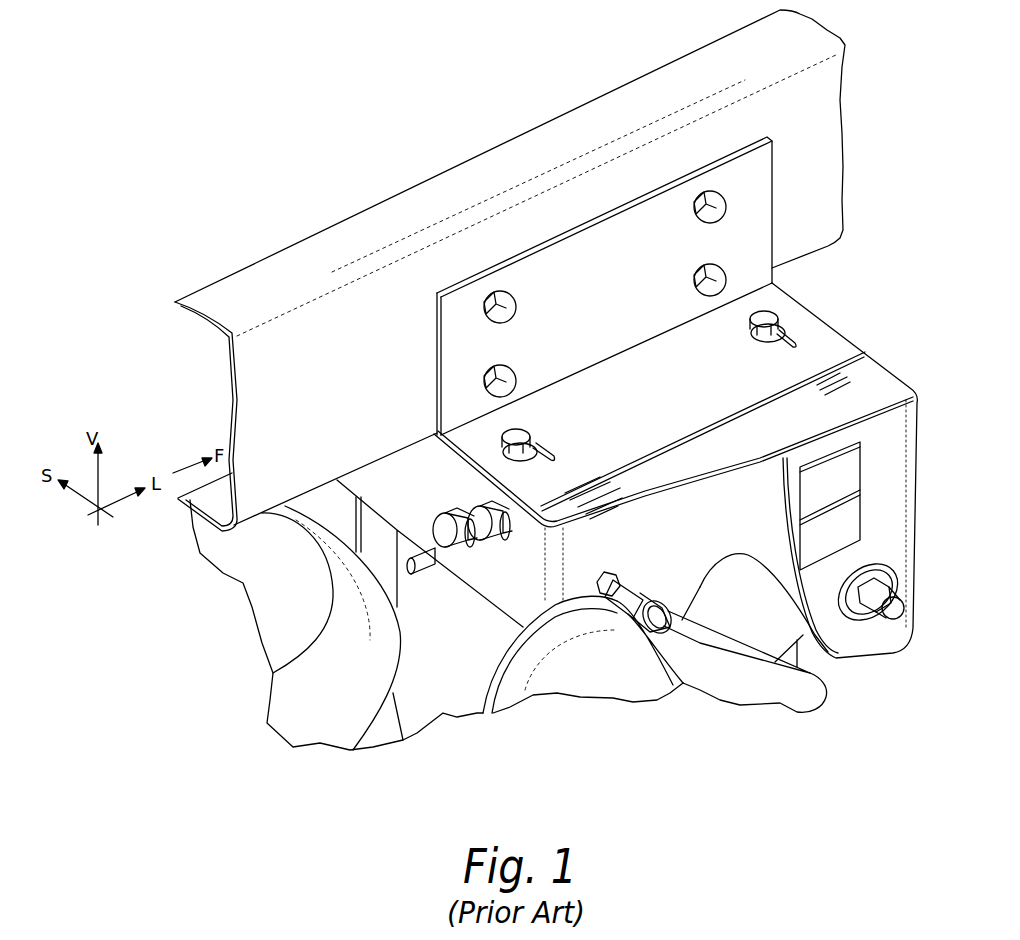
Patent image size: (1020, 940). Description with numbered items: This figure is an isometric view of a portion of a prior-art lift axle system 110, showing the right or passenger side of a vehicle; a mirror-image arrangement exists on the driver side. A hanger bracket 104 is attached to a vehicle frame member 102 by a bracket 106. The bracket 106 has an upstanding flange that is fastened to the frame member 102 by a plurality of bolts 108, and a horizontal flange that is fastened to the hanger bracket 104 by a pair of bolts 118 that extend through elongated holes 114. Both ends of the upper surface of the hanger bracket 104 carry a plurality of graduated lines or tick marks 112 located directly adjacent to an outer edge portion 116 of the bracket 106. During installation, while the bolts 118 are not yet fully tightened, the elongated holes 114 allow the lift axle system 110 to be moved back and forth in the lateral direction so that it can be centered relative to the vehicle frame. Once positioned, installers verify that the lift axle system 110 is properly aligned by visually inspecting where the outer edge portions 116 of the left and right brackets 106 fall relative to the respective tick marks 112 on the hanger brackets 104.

The frame member 102 is at (408, 207).
The hanger bracket 104 is at (887, 397).
The bracket 106 is at (745, 232).
The bolts 108 is at (730, 202).
The lift axle system 110 is at (852, 682).
The tick marks 112 is at (583, 495).
The elongated holes 114 is at (790, 337).
The outer edge portion 116 is at (857, 443).
The bolts 118 is at (773, 305).